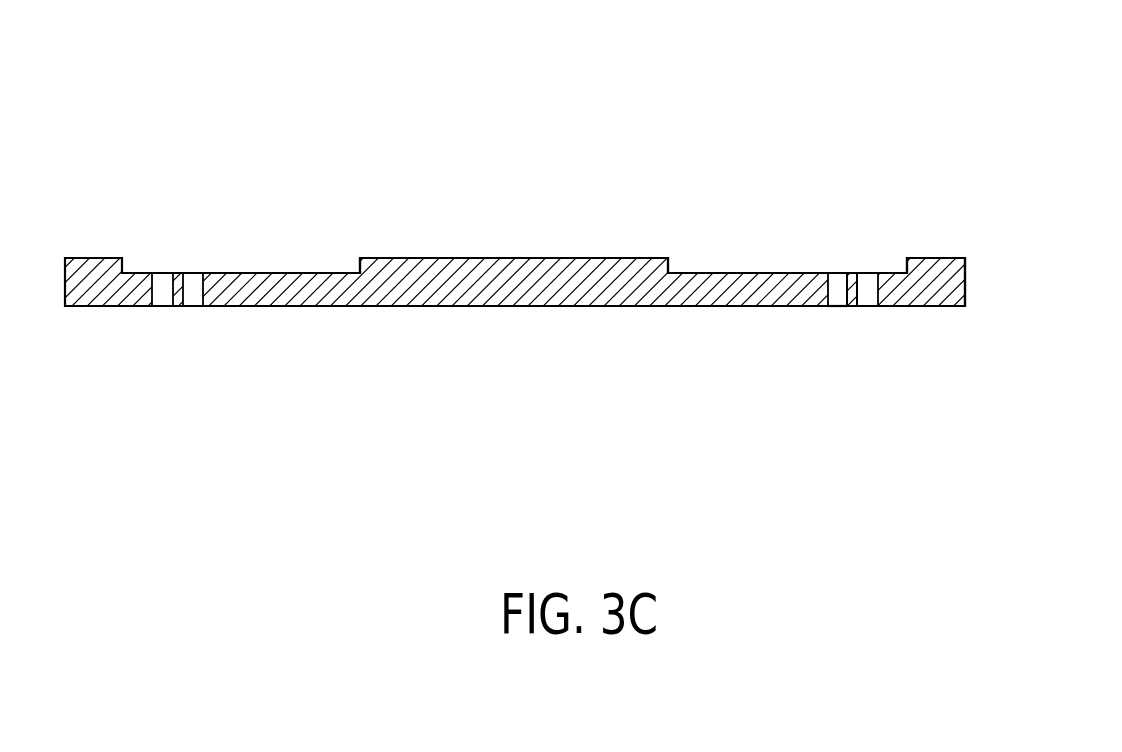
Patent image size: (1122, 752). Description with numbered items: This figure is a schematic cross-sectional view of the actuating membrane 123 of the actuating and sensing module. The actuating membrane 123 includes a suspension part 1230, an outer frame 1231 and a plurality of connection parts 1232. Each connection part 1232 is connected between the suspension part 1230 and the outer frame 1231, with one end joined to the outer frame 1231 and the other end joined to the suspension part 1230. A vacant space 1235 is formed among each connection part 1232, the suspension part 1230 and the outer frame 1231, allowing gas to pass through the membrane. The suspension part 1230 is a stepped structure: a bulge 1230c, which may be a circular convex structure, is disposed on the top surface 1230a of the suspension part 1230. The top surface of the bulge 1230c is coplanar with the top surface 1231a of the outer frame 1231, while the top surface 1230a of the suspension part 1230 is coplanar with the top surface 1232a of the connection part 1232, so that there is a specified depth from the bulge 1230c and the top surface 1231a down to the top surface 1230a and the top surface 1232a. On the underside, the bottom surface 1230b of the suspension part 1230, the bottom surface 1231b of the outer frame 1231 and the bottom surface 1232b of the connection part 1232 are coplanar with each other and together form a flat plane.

The actuating membrane 123 is at (1072, 65).
The suspension part 1230 is at (328, 246).
The top surface of the suspension part 1230a is at (755, 273).
The bottom surface of the suspension part 1230b is at (207, 307).
The bulge 1230c is at (515, 258).
The outer frame 1231 is at (992, 281).
The top surface of the outer frame 1231a is at (932, 258).
The bottom surface of the outer frame 1231b is at (940, 307).
The connection part 1232 is at (856, 238).
The top surface of the connection part 1232a is at (852, 277).
The bottom surface of the connection part 1232b is at (852, 306).
The vacant space 1235 is at (840, 307).